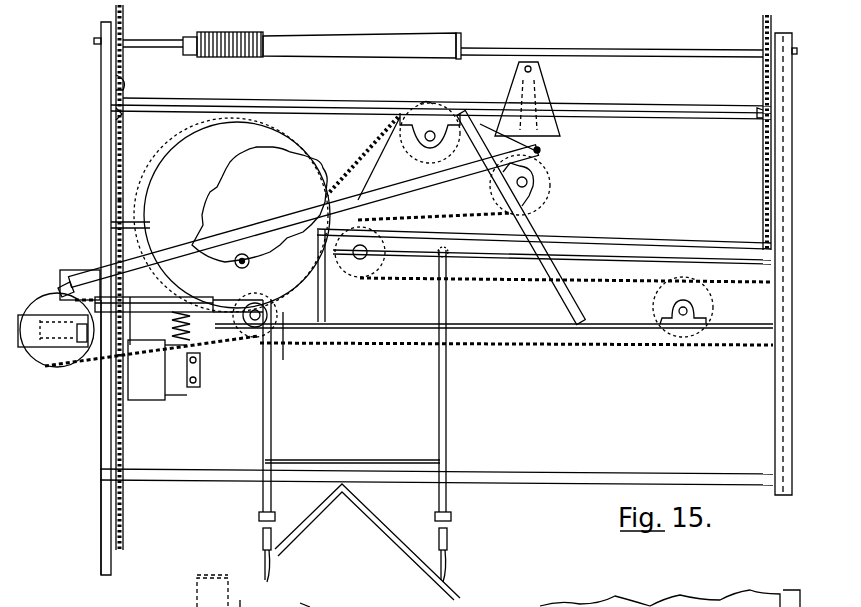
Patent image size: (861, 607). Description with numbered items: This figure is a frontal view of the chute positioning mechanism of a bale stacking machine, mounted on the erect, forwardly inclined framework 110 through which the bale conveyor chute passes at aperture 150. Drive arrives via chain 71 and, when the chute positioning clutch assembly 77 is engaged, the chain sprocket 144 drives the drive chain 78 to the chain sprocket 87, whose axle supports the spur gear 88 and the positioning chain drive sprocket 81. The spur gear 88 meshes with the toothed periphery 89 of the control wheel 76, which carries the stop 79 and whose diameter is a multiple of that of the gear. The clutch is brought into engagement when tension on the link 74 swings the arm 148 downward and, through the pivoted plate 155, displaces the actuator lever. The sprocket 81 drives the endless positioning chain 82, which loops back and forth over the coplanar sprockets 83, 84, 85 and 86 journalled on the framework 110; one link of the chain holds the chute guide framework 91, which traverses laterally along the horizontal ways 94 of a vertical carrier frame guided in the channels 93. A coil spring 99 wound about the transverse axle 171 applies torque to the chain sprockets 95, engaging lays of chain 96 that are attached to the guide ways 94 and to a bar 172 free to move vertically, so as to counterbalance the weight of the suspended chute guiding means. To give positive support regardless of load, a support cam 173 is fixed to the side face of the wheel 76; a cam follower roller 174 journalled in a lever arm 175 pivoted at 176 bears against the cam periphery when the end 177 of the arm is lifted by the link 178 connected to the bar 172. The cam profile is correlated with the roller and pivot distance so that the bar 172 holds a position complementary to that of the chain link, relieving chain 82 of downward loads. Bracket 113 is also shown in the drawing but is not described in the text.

The chain 71 is at (124, 506).
The link 74 is at (100, 526).
The control wheel 76 is at (186, 164).
The chute positioning clutch assembly 77 is at (34, 291).
The drive chain 78 is at (218, 344).
The stop 79 is at (238, 300).
The positioning chain drive sprocket 81 is at (270, 311).
The endless positioning chain 82 is at (627, 278).
The sprocket 83 is at (706, 305).
The sprocket 84 is at (368, 270).
The sprocket 85 is at (545, 196).
The sprocket 86 is at (413, 148).
The chain sprocket 87 is at (272, 365).
The spur gear 88 is at (282, 329).
The toothed periphery 89 is at (271, 128).
The chute guide framework 91 is at (272, 417).
The channels 93 is at (775, 397).
The horizontal ways 94 is at (684, 250).
The chain sprockets 95 is at (121, 31).
The chain 96 is at (116, 81).
The coil spring 99 is at (300, 36).
The erect framework 110 is at (100, 189).
The bracket 113 is at (176, 399).
The chain sprocket 144 is at (55, 355).
The arm 148 is at (207, 389).
The aperture 150 is at (576, 434).
The plate 155 is at (137, 401).
The transverse axle 171 is at (604, 49).
The bar 172 is at (636, 111).
The support cam 173 is at (290, 175).
The cam follower roller 174 is at (249, 262).
The lever arm 175 is at (397, 191).
The pivot 176 is at (72, 270).
The end 177 is at (545, 152).
The link 178 is at (560, 129).